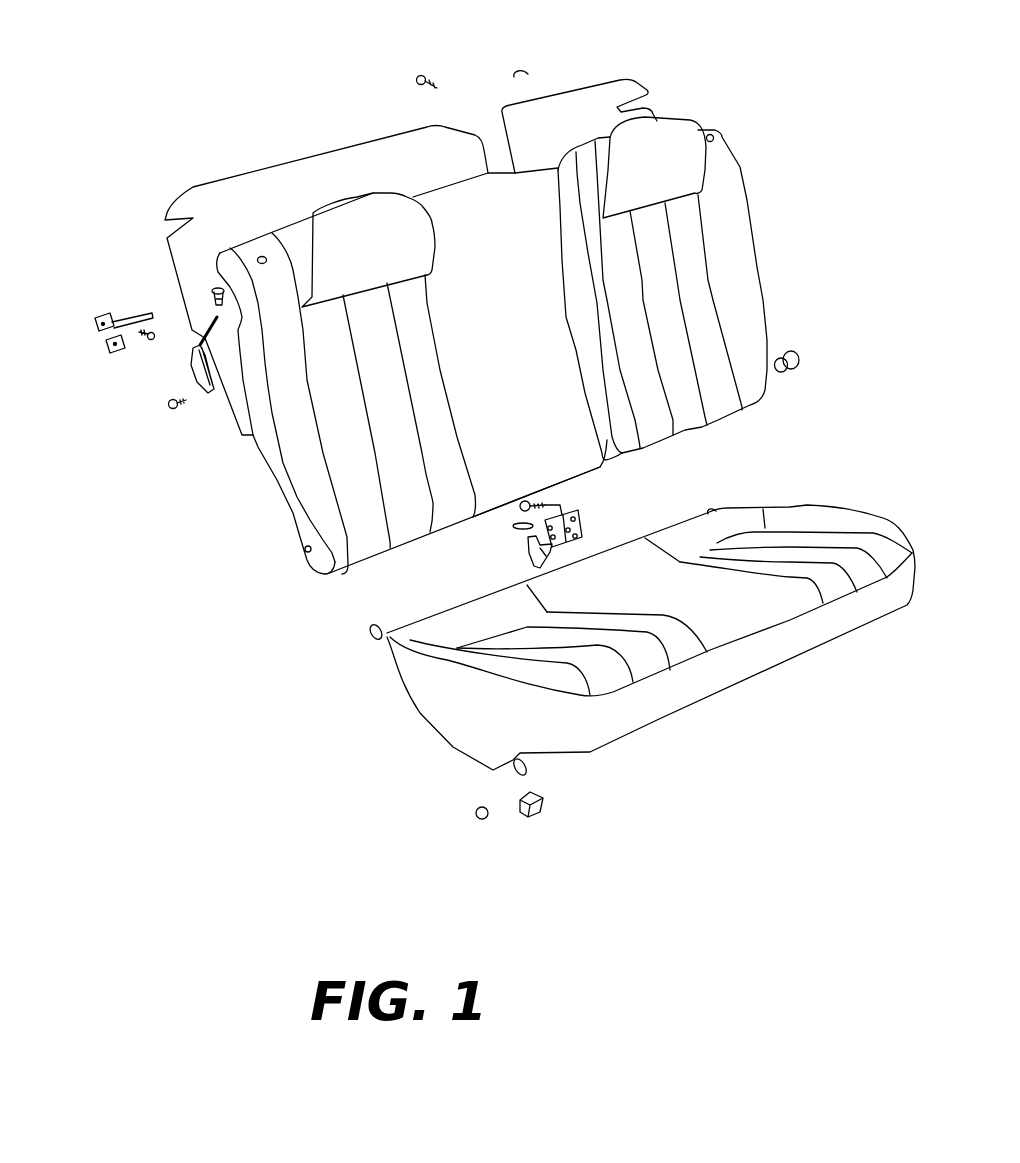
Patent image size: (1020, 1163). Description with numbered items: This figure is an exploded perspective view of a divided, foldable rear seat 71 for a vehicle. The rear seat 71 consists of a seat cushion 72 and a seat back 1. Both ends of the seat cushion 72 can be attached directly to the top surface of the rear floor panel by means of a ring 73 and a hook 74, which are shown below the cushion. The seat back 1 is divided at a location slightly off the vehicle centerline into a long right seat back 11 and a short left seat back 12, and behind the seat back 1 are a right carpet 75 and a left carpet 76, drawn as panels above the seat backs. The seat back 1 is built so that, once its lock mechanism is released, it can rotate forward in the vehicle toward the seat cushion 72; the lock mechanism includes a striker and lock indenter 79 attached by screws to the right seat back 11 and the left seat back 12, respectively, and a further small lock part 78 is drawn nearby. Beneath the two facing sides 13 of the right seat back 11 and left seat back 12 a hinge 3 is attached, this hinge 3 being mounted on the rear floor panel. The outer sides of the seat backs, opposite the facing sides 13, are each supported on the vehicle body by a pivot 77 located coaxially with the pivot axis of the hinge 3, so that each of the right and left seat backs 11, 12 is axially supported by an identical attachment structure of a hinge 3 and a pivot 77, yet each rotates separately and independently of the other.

The seat back 1 is at (716, 136).
The hinge 3 is at (527, 543).
The right seat back 11 is at (366, 545).
The left seat back 12 is at (685, 423).
The facing sides 13 is at (603, 465).
The rear seat 71 is at (803, 240).
The seat cushion 72 is at (853, 520).
The ring 73 is at (483, 819).
The hook 74 is at (537, 816).
The right carpet 75 is at (322, 168).
The left carpet 76 is at (568, 112).
The pivot 77 is at (787, 372).
The lock assembly 78 is at (103, 307).
The striker and lock indenter 79 is at (200, 392).